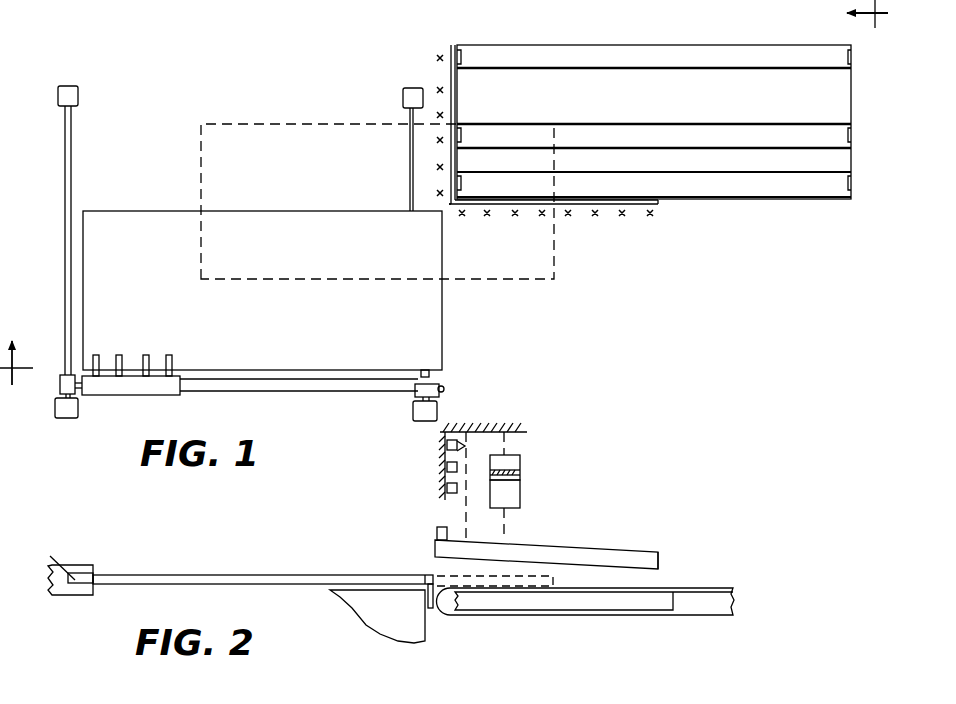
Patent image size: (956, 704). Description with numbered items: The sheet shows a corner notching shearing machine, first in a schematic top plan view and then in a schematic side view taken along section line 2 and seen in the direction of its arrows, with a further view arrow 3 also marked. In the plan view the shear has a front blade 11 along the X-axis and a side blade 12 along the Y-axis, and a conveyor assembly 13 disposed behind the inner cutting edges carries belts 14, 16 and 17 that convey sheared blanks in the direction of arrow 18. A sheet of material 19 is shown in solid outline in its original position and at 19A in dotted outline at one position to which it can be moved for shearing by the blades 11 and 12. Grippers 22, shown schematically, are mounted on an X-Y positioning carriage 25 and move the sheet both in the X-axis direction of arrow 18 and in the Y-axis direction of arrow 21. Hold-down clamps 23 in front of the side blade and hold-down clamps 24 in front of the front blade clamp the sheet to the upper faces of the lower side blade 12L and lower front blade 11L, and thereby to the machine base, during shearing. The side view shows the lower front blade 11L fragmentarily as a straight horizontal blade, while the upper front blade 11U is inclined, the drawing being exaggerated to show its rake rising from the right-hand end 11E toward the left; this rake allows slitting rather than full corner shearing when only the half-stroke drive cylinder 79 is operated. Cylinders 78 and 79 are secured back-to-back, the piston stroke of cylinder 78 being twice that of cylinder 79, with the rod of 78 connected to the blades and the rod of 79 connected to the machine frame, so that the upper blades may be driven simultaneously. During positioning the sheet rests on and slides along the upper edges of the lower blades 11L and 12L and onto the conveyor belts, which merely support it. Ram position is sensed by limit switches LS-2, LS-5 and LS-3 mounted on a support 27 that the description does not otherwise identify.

In FIG. 1, the front blade 11 is at (607, 200).
In FIG. 1, the side blade 12 is at (452, 78).
In FIG. 1, the conveyor assembly 13 is at (654, 122).
In FIG. 2, the conveyor assembly 13 is at (636, 619).
In FIG. 1, the belt 14 is at (728, 190).
In FIG. 1, the belt 16 is at (730, 135).
In FIG. 1, the belt 17 is at (738, 57).
In FIG. 1, the arrow 18 is at (789, 243).
In FIG. 1, the sheet of material 19 is at (430, 318).
In FIG. 2, the sheet of material 19 is at (210, 573).
In FIG. 1, the sheet in shearing position 19A is at (545, 270).
In FIG. 2, the sheet in shearing position 19A is at (523, 578).
In FIG. 1, the arrow 21 is at (523, 298).
In FIG. 1, the grippers 22 is at (96, 355).
In FIG. 2, the grippers 22 is at (78, 568).
In FIG. 1, the hold-down clamps 23 is at (441, 42).
In FIG. 1, the hold-down clamps 24 is at (661, 212).
In FIG. 1, the carriage 25 is at (122, 394).
In FIG. 2, the mounting bracket 27 is at (515, 427).
In FIG. 1, the section line 2— 2 is at (764, 353).
In FIG. 1, the view direction FIG. 3 is at (872, 280).
In FIG. 2, the limit switch LS-2 is at (445, 444).
In FIG. 2, the limit switch LS-5 is at (445, 467).
In FIG. 2, the limit switch LS-3 is at (445, 488).
In FIG. 2, the cylinder 78 is at (512, 497).
In FIG. 2, the half-stroke drive cylinder 79 is at (520, 460).
In FIG. 2, the upper front blade 11U is at (600, 554).
In FIG. 2, the right-hand end of upper front blade 11E is at (658, 560).
In FIG. 2, the lower front blade 11L is at (513, 600).
In FIG. 2, the lower side blade 12L is at (433, 608).